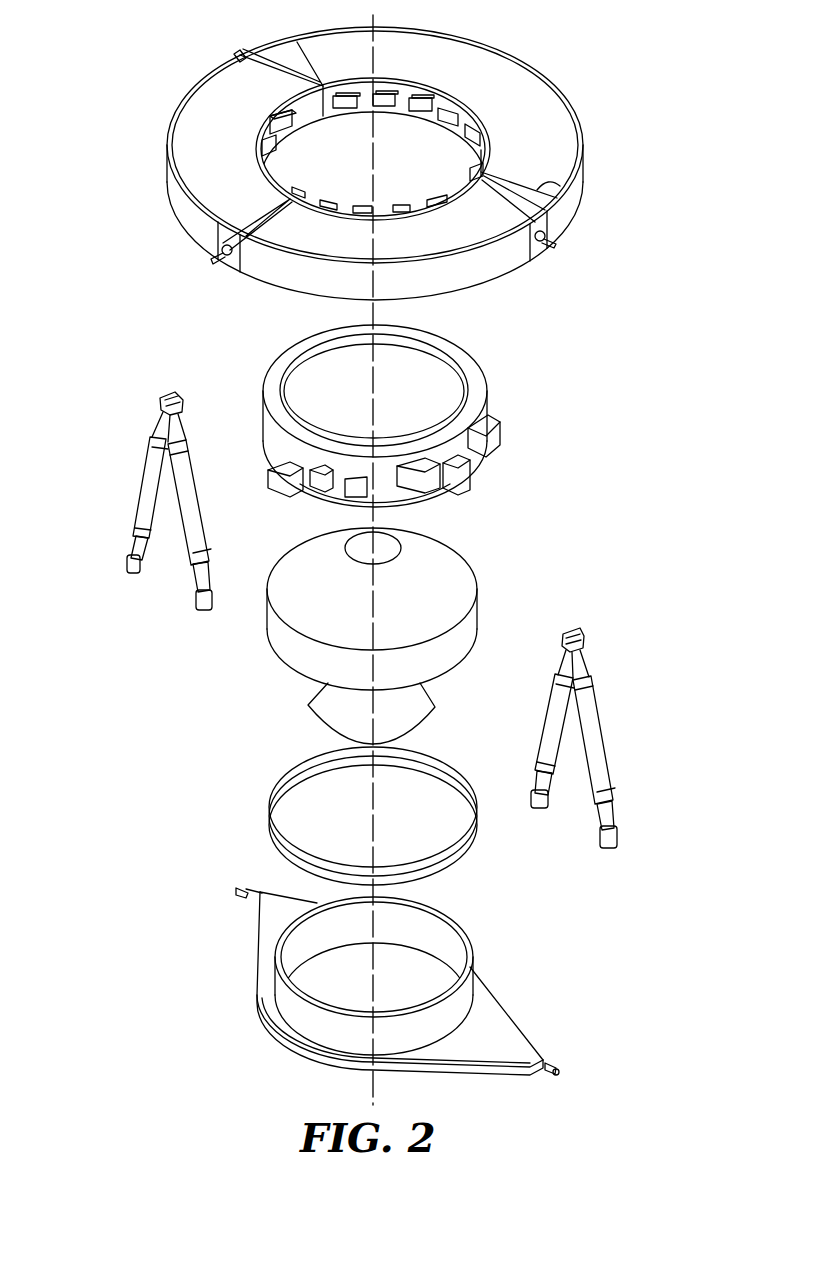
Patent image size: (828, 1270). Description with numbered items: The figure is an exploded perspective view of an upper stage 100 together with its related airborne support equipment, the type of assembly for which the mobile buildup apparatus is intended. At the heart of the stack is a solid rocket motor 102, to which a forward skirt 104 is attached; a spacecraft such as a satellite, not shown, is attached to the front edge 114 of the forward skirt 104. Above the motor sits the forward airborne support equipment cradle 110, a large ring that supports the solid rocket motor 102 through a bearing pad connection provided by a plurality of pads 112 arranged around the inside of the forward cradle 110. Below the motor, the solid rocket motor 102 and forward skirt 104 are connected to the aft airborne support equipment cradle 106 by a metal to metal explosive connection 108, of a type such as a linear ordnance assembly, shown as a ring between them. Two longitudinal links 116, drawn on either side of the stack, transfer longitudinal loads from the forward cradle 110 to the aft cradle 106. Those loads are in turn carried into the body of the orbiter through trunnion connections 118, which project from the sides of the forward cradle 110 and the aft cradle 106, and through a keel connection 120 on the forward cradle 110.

The upper stage 100 is at (369, 558).
The solid rocket motor 102 is at (467, 560).
The forward skirt 104 is at (415, 415).
The aft airborne support equipment cradle 106 is at (507, 1030).
The metal to metal explosive connection 108 is at (457, 855).
The forward airborne support equipment cradle 110 is at (563, 100).
The pads 112 is at (465, 140).
The front edge 114 is at (458, 352).
The longitudinal links 116 is at (150, 440).
The trunnion connections 118 is at (238, 54).
The keel connections 120 is at (222, 256).